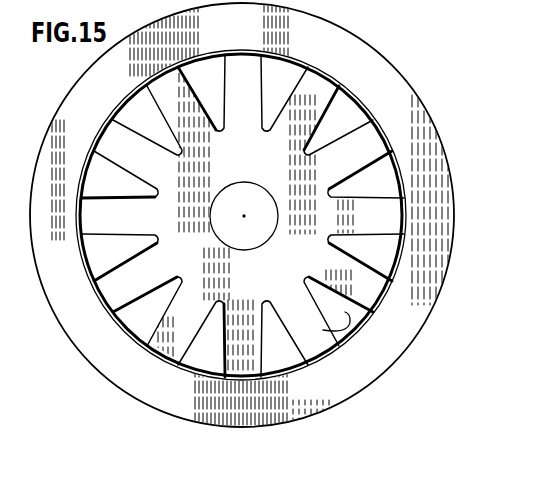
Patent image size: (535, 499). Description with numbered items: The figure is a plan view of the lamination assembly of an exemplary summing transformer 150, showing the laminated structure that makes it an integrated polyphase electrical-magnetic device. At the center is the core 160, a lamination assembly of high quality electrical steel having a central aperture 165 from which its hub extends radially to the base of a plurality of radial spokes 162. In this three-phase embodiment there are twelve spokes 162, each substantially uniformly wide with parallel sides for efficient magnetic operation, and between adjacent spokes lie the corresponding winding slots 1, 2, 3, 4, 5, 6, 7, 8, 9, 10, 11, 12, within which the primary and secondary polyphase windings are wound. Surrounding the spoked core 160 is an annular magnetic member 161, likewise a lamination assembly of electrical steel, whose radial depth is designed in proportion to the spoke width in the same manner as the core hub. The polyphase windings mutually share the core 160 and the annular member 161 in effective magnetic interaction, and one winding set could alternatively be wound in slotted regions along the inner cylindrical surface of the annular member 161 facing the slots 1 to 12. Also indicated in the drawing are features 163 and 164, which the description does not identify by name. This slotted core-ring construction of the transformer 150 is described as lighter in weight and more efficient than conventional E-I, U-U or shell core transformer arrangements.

The summing transformer 150 is at (61, 107).
The core 160 is at (243, 216).
The annular magnetic member 161 is at (401, 86).
The radial spokes 162 is at (317, 88).
The slot insulation ring 163 is at (388, 200).
The lead wire 164 is at (376, 104).
The central aperture 165 is at (271, 234).
The winding slot 1 is at (284, 93).
The winding slot 2 is at (338, 120).
The winding slot 3 is at (366, 174).
The winding slot 4 is at (366, 257).
The winding slot 5 is at (338, 311).
The winding slot 6 is at (284, 339).
The winding slot 7 is at (201, 339).
The winding slot 8 is at (147, 311).
The winding slot 9 is at (120, 257).
The winding slot 10 is at (120, 174).
The winding slot 11 is at (147, 120).
The winding slot 12 is at (201, 93).